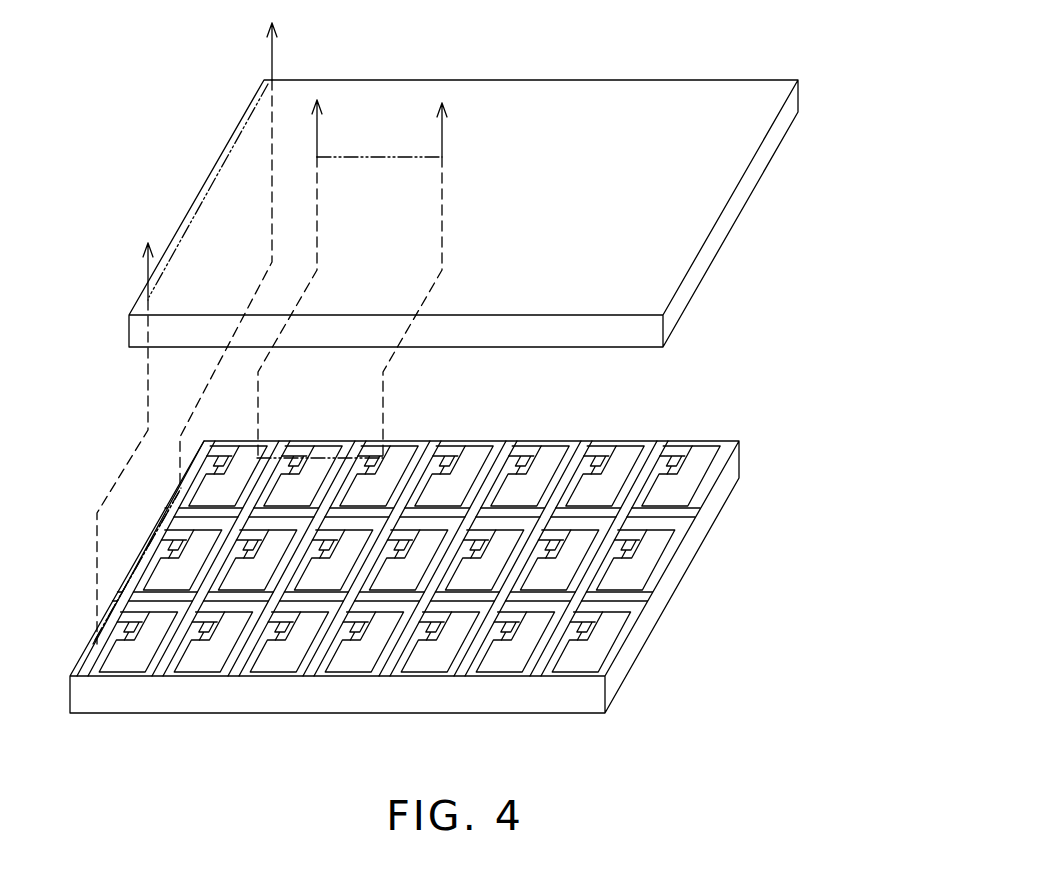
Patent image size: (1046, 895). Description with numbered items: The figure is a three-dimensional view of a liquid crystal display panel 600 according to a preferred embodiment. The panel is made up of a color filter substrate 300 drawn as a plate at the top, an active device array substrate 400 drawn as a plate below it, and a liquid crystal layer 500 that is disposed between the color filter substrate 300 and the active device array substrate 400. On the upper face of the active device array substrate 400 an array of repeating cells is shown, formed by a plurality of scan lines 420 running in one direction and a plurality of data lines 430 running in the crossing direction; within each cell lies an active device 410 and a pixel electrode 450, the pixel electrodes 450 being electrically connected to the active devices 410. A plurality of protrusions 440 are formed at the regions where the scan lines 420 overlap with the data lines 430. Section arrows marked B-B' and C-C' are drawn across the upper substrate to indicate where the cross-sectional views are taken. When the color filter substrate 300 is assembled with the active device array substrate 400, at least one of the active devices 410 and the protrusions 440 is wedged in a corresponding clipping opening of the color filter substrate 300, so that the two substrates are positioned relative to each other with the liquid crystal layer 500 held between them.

The color filter substrate 300 is at (778, 229).
The active device array substrate 400 is at (730, 637).
The active devices 410 is at (455, 434).
The scan lines 420 is at (637, 600).
The data lines 430 is at (381, 750).
The protrusions 440 is at (154, 498).
The pixel electrodes 450 is at (478, 447).
The liquid crystal layer 500 is at (691, 410).
The liquid crystal display panel 600 is at (762, 787).